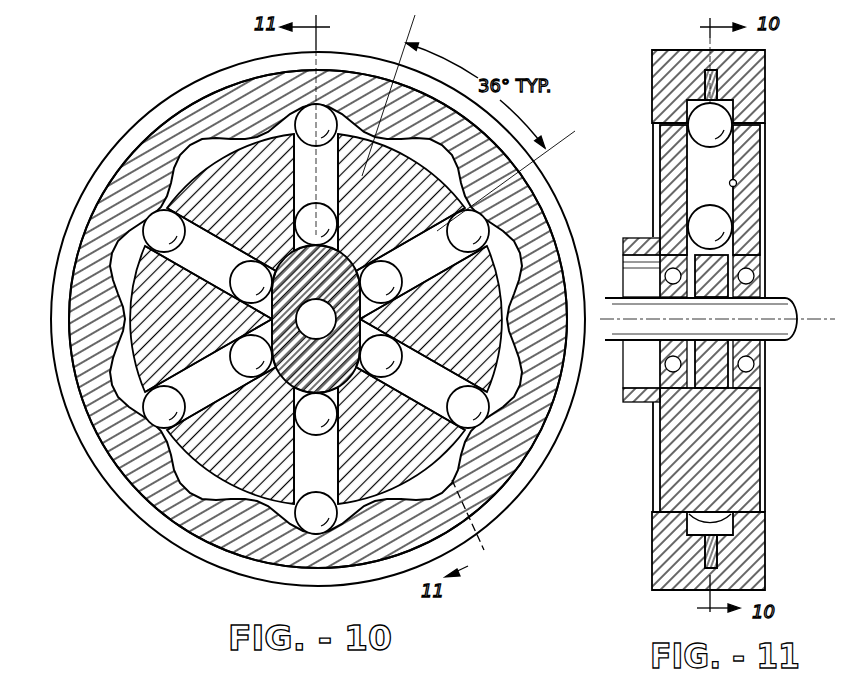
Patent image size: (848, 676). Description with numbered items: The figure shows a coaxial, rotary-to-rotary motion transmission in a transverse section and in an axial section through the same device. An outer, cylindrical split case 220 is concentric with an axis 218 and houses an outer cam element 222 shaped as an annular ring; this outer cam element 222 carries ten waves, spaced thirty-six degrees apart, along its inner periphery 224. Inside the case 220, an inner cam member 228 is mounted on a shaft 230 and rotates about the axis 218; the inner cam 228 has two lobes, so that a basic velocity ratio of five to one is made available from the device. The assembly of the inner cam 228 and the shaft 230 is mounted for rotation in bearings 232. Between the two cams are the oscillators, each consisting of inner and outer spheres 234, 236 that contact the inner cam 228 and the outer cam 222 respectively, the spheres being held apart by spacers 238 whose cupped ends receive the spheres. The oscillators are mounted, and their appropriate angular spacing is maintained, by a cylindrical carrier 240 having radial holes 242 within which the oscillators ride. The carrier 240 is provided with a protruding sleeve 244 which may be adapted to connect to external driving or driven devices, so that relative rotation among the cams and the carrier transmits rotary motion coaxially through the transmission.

In FIG. 11, the axis 218 is at (803, 324).
In FIG. 11, the outer cylindrical split case 220 is at (668, 50).
In FIG. 10, the outer cam element 222 is at (510, 200).
In FIG. 11, the outer cam element 222 is at (723, 80).
In FIG. 10, the inner periphery 224 is at (361, 312).
In FIG. 10, the inner cam member 228 is at (308, 223).
In FIG. 11, the inner cam member 228 is at (715, 388).
In FIG. 10, the shaft 230 is at (100, 298).
In FIG. 11, the shaft 230 is at (776, 296).
In FIG. 11, the bearings 232 is at (757, 258).
In FIG. 10, the inner spheres 234 is at (300, 176).
In FIG. 11, the inner spheres 234 is at (722, 227).
In FIG. 10, the outer spheres 236 is at (312, 106).
In FIG. 11, the outer spheres 236 is at (722, 118).
In FIG. 10, the spacers 238 is at (290, 136).
In FIG. 11, the spacers 238 is at (733, 147).
In FIG. 11, the cylindrical carrier 240 is at (750, 460).
In FIG. 11, the radial holes 242 is at (736, 183).
In FIG. 11, the protruding sleeve 244 is at (642, 404).